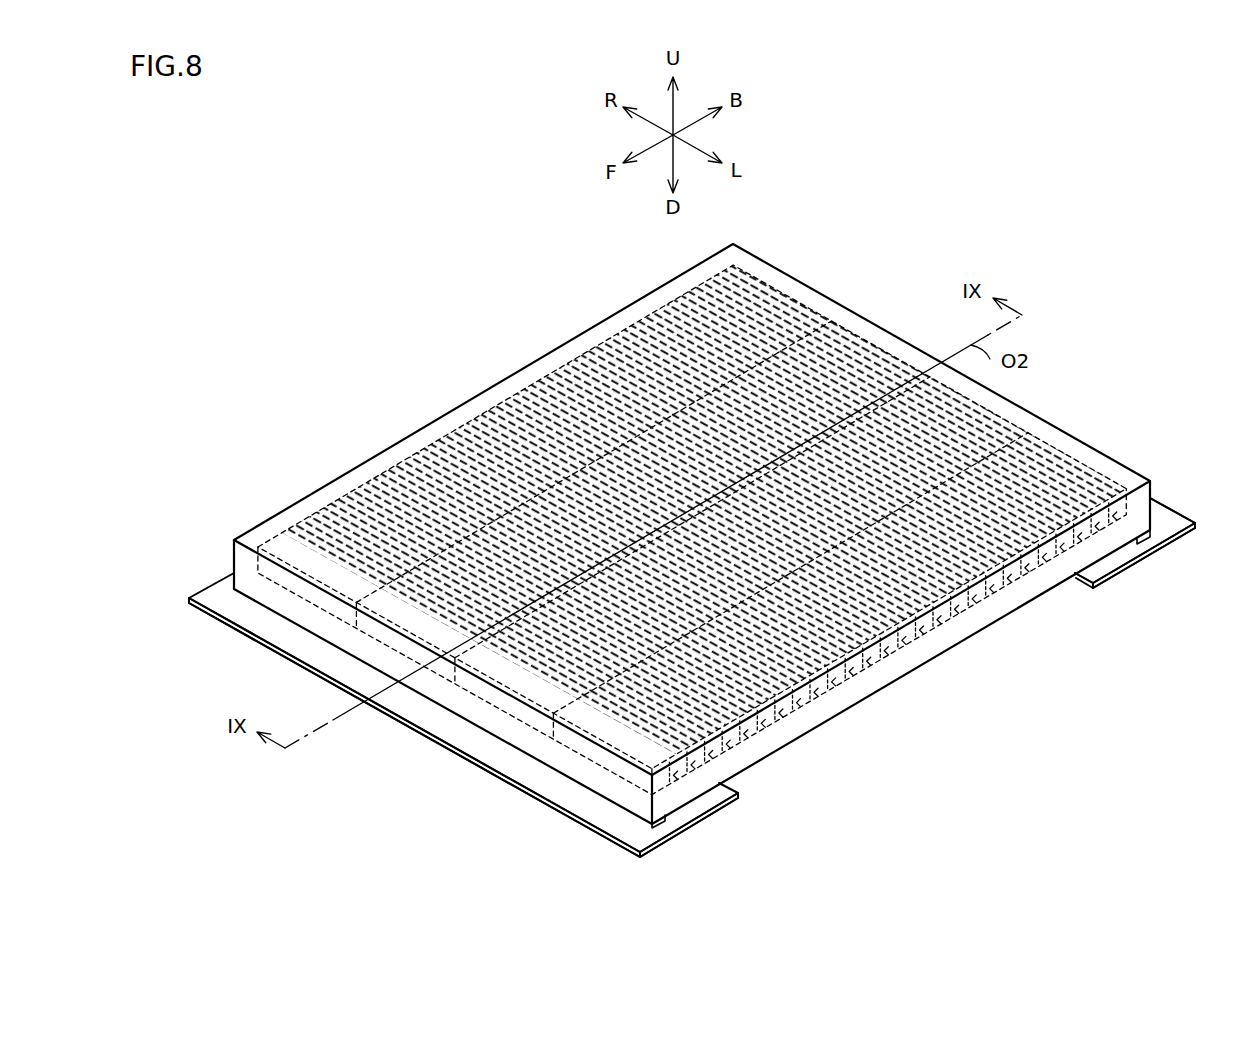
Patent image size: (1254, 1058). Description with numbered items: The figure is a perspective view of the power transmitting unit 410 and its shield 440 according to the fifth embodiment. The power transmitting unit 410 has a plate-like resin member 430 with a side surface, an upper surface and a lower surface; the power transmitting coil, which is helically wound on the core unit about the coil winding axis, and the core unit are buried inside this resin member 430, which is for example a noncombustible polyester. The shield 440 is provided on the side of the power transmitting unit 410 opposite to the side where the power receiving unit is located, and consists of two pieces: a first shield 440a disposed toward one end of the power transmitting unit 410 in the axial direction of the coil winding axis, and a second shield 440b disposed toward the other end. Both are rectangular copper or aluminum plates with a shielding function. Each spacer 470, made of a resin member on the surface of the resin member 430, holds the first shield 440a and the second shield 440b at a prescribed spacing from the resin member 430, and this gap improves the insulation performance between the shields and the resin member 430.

The power transmitting unit 410 is at (888, 717).
The resin member 430 is at (962, 625).
The shield 440 is at (1179, 480).
The first shield 440a is at (448, 728).
The second shield 440b is at (1117, 555).
The spacer 470 is at (664, 818).